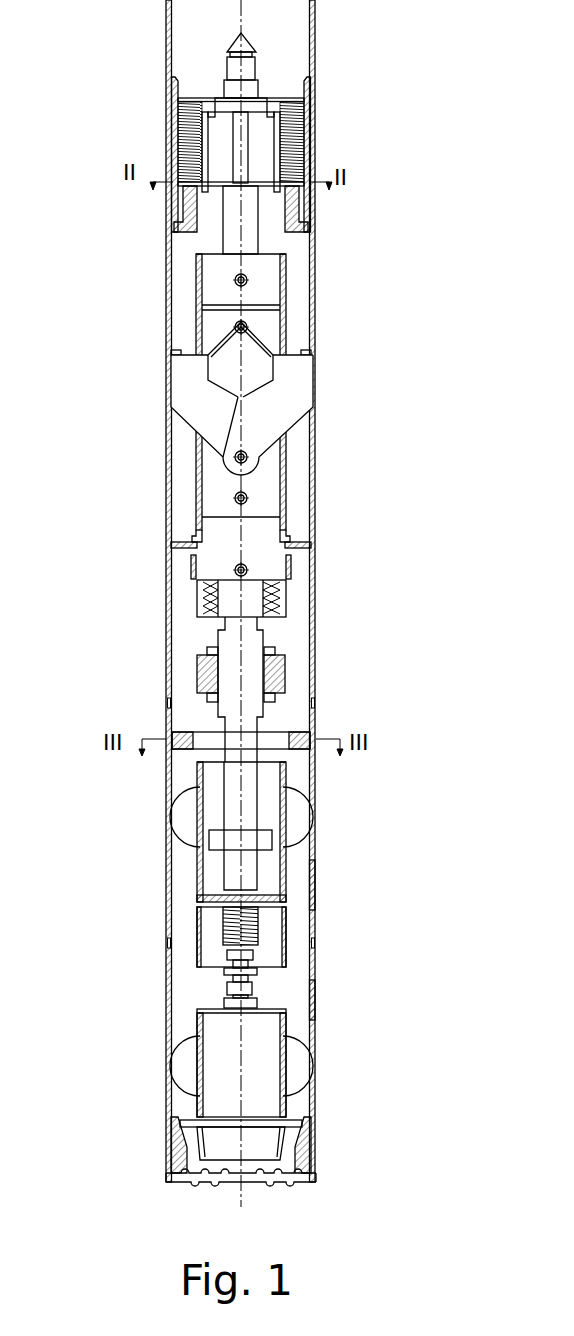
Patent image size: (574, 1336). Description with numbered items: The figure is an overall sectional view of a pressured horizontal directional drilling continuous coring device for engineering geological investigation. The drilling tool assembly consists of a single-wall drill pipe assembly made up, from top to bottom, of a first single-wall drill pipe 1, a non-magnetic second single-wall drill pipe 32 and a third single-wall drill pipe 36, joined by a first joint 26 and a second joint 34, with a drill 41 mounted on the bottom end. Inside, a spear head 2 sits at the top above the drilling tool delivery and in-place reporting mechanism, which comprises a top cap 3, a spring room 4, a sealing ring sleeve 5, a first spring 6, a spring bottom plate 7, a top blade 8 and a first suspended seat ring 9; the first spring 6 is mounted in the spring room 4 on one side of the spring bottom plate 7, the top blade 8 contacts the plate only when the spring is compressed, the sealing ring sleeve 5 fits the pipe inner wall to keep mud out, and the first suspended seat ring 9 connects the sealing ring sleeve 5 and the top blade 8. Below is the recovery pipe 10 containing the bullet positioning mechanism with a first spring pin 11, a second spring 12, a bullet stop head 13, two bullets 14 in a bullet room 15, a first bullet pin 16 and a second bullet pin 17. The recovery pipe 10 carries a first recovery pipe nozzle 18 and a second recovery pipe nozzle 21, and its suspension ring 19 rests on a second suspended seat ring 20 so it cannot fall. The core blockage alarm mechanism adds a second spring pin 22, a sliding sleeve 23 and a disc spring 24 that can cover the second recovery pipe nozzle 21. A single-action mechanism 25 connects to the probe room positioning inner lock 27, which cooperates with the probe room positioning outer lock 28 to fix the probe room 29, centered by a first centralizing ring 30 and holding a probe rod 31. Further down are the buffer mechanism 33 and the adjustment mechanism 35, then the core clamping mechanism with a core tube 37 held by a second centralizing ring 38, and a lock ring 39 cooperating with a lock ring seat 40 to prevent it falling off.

The first single-wall drill pipe 1 is at (166, 33).
The spear head 2 is at (228, 63).
The top cap 3 is at (215, 97).
The spring room 4 is at (180, 125).
The sealing ring sleeve 5 is at (172, 152).
The first spring 6 is at (303, 158).
The spring bottom plate 7 is at (176, 186).
The top blade 8 is at (298, 210).
The first suspended seat ring 9 is at (178, 227).
The recovery pipe 10 is at (287, 265).
The first spring pin 11 is at (235, 282).
The second spring 12 is at (235, 328).
The bullet stop head 13 is at (300, 352).
The bullet 14 is at (208, 368).
The bullet room 15 is at (313, 407).
The first bullet pin 16 is at (235, 458).
The second bullet pin 17 is at (235, 498).
The first recovery pipe nozzle 18 is at (290, 528).
The suspension ring 19 is at (305, 542).
The second suspended seat ring 20 is at (178, 547).
The second recovery pipe nozzle 21 is at (288, 563).
The second spring pin 22 is at (235, 570).
The sliding sleeve 23 is at (292, 593).
The disc spring 24 is at (205, 600).
The single-action mechanism 25 is at (200, 675).
The first joint 26 is at (168, 703).
The probe room positioning inner lock 27 is at (275, 725).
The probe room positioning outer lock 28 is at (300, 748).
The probe room 29 is at (198, 775).
The first centralizing ring 30 is at (195, 813).
The probe rod 31 is at (225, 872).
The second single-wall drill pipe 32 is at (316, 887).
The buffer mechanism 33 is at (223, 923).
The second joint 34 is at (312, 943).
The adjustment mechanism 35 is at (227, 987).
The third single-wall drill pipe 36 is at (316, 1000).
The core tube 37 is at (197, 1027).
The second centralizing ring 38 is at (196, 1067).
The lock ring 39 is at (180, 1127).
The lock ring seat 40 is at (172, 1150).
The drill 41 is at (166, 1177).